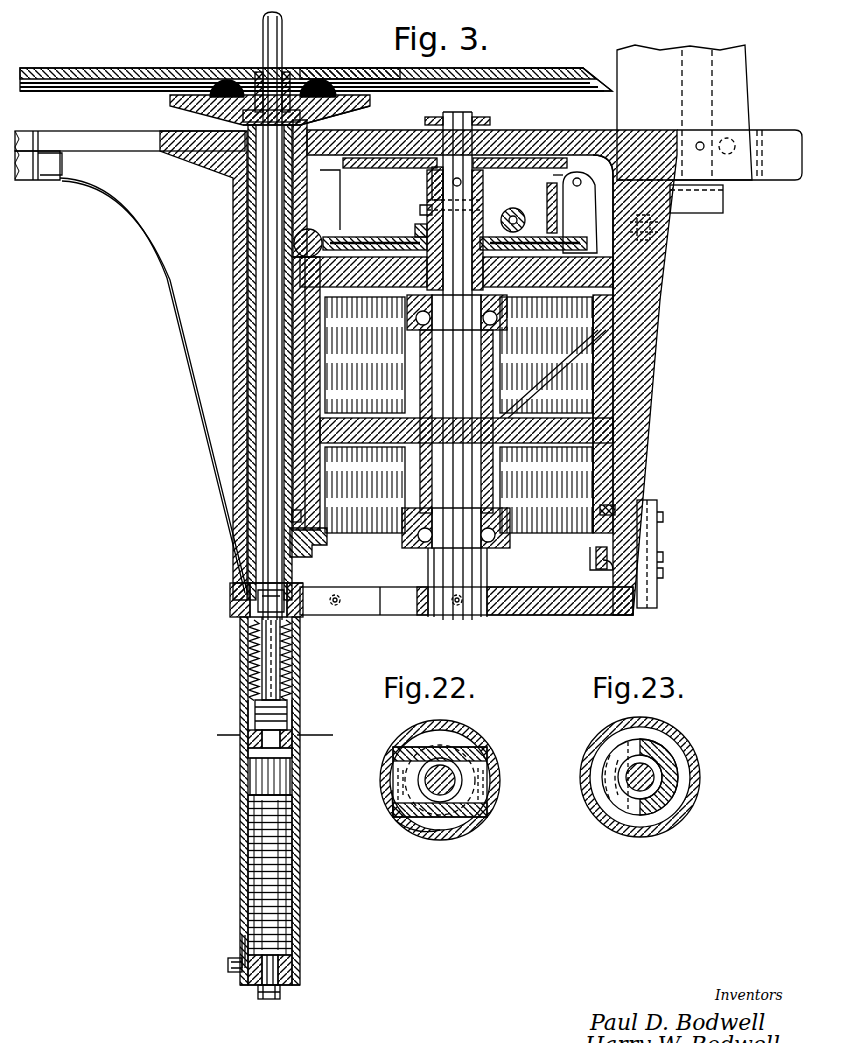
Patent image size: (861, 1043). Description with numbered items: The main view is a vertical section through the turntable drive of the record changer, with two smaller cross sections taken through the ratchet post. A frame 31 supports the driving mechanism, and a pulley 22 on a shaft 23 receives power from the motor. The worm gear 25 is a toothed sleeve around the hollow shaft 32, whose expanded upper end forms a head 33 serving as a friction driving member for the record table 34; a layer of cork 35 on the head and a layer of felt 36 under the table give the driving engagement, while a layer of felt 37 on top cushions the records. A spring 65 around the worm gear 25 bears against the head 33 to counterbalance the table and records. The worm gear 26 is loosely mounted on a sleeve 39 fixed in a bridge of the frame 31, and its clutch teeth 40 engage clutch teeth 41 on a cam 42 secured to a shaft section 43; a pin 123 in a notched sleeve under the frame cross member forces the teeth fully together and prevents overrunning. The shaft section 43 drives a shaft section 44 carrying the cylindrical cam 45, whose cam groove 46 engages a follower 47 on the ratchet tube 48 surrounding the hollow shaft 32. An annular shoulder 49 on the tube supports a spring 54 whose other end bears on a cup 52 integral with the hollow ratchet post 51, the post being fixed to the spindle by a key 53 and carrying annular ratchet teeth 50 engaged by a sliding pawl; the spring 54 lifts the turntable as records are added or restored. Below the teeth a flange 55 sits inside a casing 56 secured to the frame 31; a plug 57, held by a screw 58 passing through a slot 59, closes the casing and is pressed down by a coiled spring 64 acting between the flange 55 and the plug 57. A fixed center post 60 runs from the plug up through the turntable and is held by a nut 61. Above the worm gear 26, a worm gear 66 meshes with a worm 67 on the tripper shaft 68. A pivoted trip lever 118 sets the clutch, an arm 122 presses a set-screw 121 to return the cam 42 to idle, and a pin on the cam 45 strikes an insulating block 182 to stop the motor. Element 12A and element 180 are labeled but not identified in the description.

In FIG. 3, the handle 12A is at (735, 88).
In FIG. 3, the pulley 22 is at (281, 735).
In FIG. 3, the shaft 23 is at (318, 236).
In FIG. 3, the worm gear 25 is at (240, 278).
In FIG. 3, the worm gear 26 is at (380, 237).
In FIG. 3, the frame 31 is at (160, 232).
In FIG. 3, the hollow shaft 32 is at (273, 407).
In FIG. 23, the hollow shaft 32 is at (656, 832).
In FIG. 3, the head 33 is at (345, 108).
In FIG. 3, the record table 34 is at (516, 84).
In FIG. 3, the layer of cork 35 is at (172, 104).
In FIG. 3, the layer of felt 36 is at (203, 68).
In FIG. 3, the layer of felt 37 is at (323, 70).
In FIG. 3, the sleeve 39 is at (505, 300).
In FIG. 3, the clutch teeth 40 is at (428, 210).
In FIG. 3, the clutch teeth 41 is at (430, 188).
In FIG. 3, the cam 42 is at (377, 170).
In FIG. 3, the shaft section 43 is at (458, 126).
In FIG. 3, the shaft section 44 is at (467, 366).
In FIG. 3, the cylindrical cam 45 is at (603, 465).
In FIG. 3, the cam groove 46 is at (430, 522).
In FIG. 3, the follower 47 is at (322, 554).
In FIG. 3, the ratchet tube 48 is at (296, 650).
In FIG. 22, the ratchet tube 48 is at (432, 826).
In FIG. 23, the ratchet tube 48 is at (672, 770).
In FIG. 3, the annular shoulder 49 is at (285, 735).
In FIG. 3, the ratchet teeth 50 is at (260, 774).
In FIG. 22, the ratchet teeth 50 is at (443, 792).
In FIG. 3, the ratchet post 51 is at (266, 657).
In FIG. 3, the cup 52 is at (232, 606).
In FIG. 23, the cup 52 is at (668, 790).
In FIG. 3, the key 53 is at (232, 592).
In FIG. 23, the key 53 is at (612, 770).
In FIG. 3, the spring 54 is at (292, 683).
In FIG. 3, the flange 55 is at (250, 801).
In FIG. 3, the casing 56 is at (298, 866).
In FIG. 22, the casing 56 is at (492, 806).
In FIG. 23, the casing 56 is at (690, 754).
In FIG. 3, the plug 57 is at (286, 986).
In FIG. 3, the screw 58 is at (228, 966).
In FIG. 3, the slot 59 is at (243, 943).
In FIG. 3, the center post 60 is at (263, 41).
In FIG. 22, the center post 60 is at (447, 770).
In FIG. 23, the center post 60 is at (648, 768).
In FIG. 3, the nut 61 is at (258, 1000).
In FIG. 3, the coiled spring 64 is at (263, 868).
In FIG. 3, the spring 65 is at (226, 166).
In FIG. 3, the worm gear 66 is at (415, 230).
In FIG. 3, the worm 67 is at (514, 212).
In FIG. 3, the tripper shaft 68 is at (523, 220).
In FIG. 3, the trip lever 118 is at (538, 212).
In FIG. 3, the set-screw 121 is at (652, 232).
In FIG. 3, the arm 122 is at (696, 199).
In FIG. 3, the pin 123 is at (520, 172).
In FIG. 3, the box 180 is at (658, 597).
In FIG. 3, the insulating block 182 is at (610, 572).